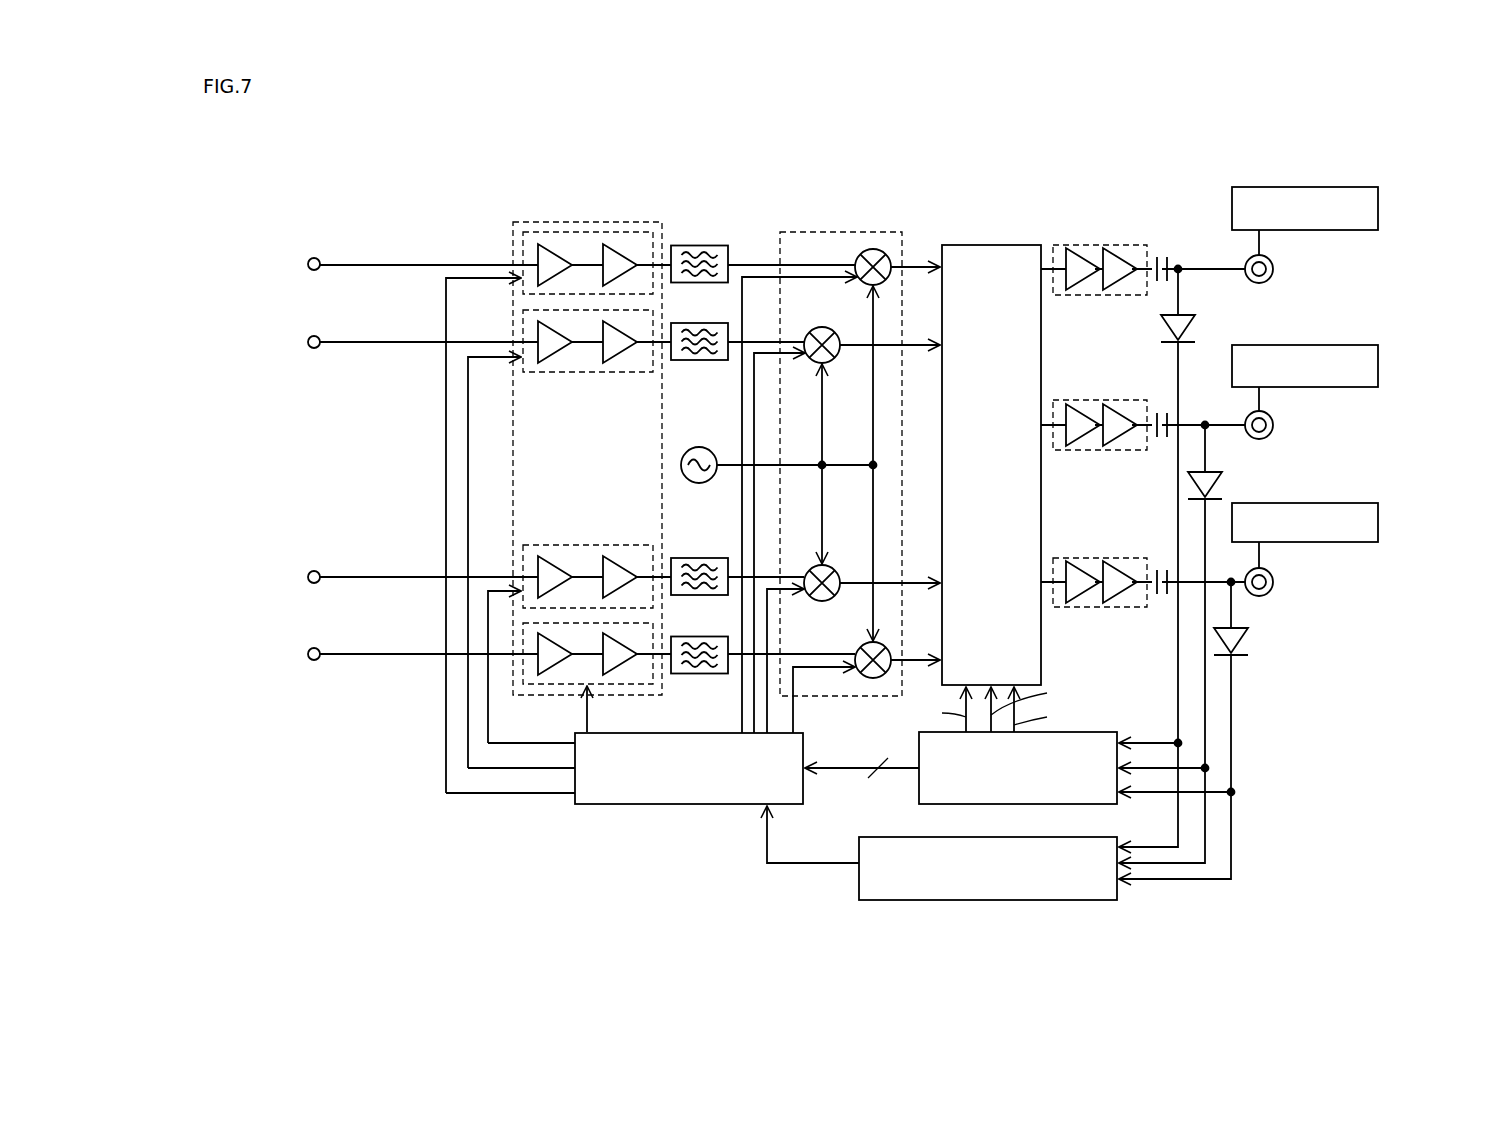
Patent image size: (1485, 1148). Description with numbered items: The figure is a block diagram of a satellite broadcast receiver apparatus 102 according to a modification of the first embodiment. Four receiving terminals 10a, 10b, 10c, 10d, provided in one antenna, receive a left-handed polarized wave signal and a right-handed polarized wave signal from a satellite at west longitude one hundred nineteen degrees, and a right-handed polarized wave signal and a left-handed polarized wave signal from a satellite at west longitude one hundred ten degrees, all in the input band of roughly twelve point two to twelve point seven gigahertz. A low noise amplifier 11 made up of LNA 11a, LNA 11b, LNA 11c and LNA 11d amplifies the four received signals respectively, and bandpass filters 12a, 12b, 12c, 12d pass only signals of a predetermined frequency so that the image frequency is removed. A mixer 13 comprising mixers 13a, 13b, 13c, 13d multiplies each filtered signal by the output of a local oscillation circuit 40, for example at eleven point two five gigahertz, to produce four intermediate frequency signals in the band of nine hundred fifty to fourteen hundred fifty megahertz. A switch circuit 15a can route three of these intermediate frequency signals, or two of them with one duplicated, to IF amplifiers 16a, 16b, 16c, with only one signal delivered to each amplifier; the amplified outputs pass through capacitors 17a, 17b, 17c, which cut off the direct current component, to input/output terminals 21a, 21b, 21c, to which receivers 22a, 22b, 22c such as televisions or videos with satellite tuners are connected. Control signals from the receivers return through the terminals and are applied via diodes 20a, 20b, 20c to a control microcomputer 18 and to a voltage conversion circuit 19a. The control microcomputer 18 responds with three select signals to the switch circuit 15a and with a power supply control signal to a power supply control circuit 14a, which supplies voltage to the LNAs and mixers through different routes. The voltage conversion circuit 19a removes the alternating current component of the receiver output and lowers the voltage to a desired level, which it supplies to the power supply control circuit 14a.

The satellite broadcast receiver apparatus 102 is at (1460, 140).
The receiving terminal 10a is at (324, 260).
The receiving terminal 10b is at (324, 349).
The receiving terminal 10c is at (324, 573).
The receiving terminal 10d is at (324, 662).
The low noise amplifier 11 is at (532, 220).
The LNA 11a is at (587, 231).
The LNA 11b is at (585, 374).
The LNA 11c is at (540, 544).
The LNA 11d is at (537, 687).
The bandpass filter 12a is at (698, 244).
The bandpass filter 12b is at (700, 362).
The bandpass filter 12c is at (678, 597).
The bandpass filter 12d is at (698, 675).
The mixer 13 is at (805, 230).
The mixer 13a is at (871, 247).
The mixer 13b is at (821, 326).
The mixer 13c is at (823, 603).
The mixer 13d is at (873, 679).
The local oscillation circuit 40 is at (698, 447).
The power supply control circuit 14a is at (663, 807).
The switch circuit 15a is at (990, 244).
The IF amplifier 16a is at (1100, 243).
The IF amplifier 16b is at (1100, 398).
The IF amplifier 16c is at (1098, 557).
The capacitor 17a is at (1168, 257).
The capacitor 17b is at (1153, 438).
The capacitor 17c is at (1153, 595).
The control microcomputer 18 is at (1020, 805).
The voltage conversion circuit 19a is at (1020, 900).
The diode 20a is at (1193, 313).
The diode 20b is at (1207, 470).
The diode 20c is at (1240, 645).
The input/output terminal 21a is at (1273, 269).
The input/output terminal 21b is at (1273, 425).
The input/output terminal 21c is at (1273, 582).
The receiver 22a is at (1380, 211).
The receiver 22b is at (1380, 369).
The receiver 22c is at (1380, 527).